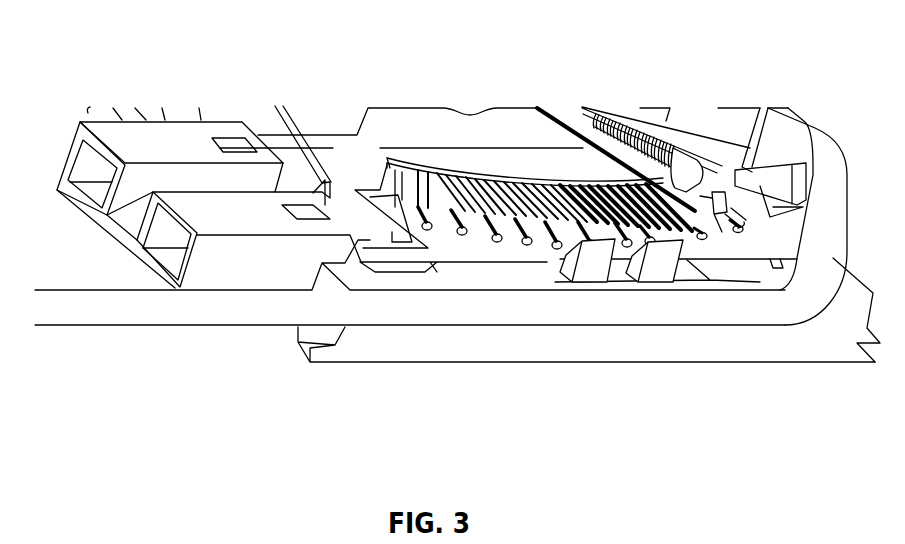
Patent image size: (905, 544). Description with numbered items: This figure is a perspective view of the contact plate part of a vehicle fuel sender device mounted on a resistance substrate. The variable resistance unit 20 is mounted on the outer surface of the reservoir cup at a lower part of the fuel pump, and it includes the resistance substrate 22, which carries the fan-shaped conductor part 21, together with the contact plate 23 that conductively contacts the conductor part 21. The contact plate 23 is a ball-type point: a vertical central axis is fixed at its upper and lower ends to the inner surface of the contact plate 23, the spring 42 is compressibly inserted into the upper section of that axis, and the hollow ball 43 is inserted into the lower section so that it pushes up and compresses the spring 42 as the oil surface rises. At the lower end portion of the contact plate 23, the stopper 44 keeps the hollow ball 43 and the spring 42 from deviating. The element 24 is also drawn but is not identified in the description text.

The variable resistance unit 20 is at (459, 368).
The fan-shaped conductor part 21 is at (538, 188).
The resistance substrate 22 is at (488, 177).
The contact plate 23 is at (720, 120).
The spring 24 is at (642, 182).
The spring 42 is at (628, 232).
The hollow ball 43 is at (703, 232).
The stopper 44 is at (733, 222).